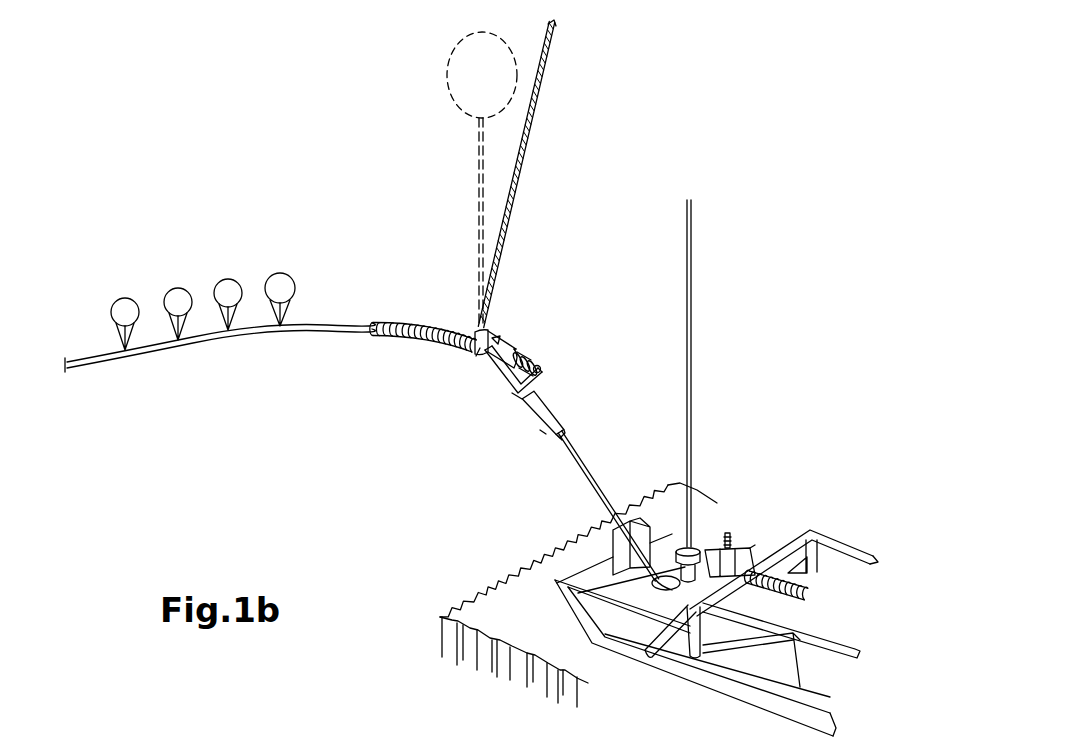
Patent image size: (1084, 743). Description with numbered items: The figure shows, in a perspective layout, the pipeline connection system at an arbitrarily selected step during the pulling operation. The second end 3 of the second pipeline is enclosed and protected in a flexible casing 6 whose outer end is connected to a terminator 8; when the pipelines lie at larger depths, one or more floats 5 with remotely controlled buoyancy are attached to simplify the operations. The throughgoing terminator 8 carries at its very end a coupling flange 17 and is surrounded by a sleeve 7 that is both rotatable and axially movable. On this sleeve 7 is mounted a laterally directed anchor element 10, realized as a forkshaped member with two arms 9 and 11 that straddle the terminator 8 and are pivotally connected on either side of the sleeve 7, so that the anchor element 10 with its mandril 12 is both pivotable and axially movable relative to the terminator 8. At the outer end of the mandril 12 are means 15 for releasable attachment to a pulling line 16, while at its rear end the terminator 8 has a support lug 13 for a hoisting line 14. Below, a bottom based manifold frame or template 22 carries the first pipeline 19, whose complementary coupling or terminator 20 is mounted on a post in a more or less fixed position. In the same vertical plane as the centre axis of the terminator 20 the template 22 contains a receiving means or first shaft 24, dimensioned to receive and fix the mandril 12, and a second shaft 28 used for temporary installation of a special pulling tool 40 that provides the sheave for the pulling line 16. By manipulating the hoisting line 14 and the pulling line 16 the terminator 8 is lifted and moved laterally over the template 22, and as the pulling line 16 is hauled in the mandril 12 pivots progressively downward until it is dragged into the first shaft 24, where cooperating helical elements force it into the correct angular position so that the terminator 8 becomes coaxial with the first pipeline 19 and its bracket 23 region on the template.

The second end of the second pipeline 3 is at (551, 362).
The floats 5 is at (173, 297).
The flexible casing 6 is at (385, 320).
The sleeve 7 is at (498, 333).
The terminator 8 is at (470, 363).
The arm 9 is at (492, 360).
The anchor element 10 is at (512, 406).
The arm 11 is at (543, 379).
The mandril 12 is at (543, 428).
The support lug 13 is at (472, 330).
The hoisting line 14 is at (527, 143).
The means for releasable attachment 15 is at (564, 437).
The pulling line 16 is at (600, 487).
The coupling flange 17 is at (541, 360).
The first pipeline 19 is at (790, 594).
The terminator on the first pipeline 20 is at (758, 540).
The template 22 is at (577, 563).
The bracket 23 is at (763, 533).
The first shaft 24 is at (655, 587).
The second shaft 28 is at (704, 556).
The pulling tool 40 is at (701, 540).